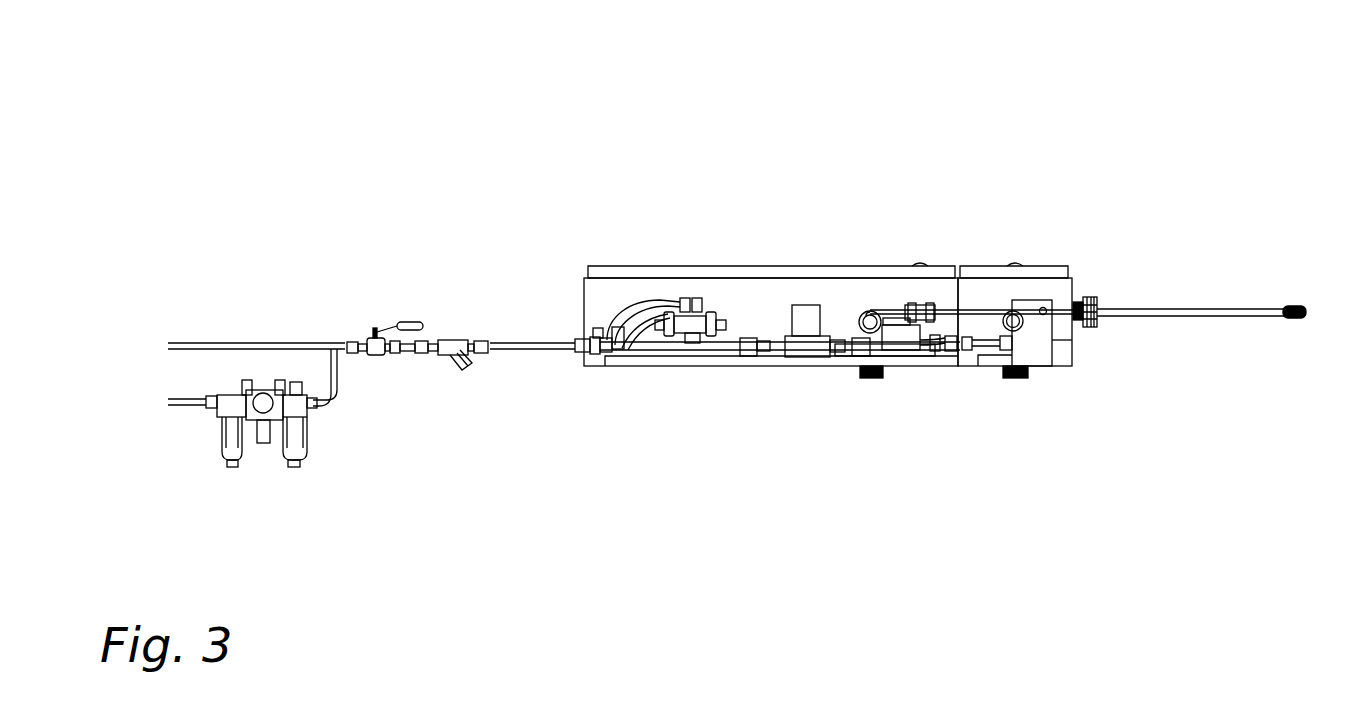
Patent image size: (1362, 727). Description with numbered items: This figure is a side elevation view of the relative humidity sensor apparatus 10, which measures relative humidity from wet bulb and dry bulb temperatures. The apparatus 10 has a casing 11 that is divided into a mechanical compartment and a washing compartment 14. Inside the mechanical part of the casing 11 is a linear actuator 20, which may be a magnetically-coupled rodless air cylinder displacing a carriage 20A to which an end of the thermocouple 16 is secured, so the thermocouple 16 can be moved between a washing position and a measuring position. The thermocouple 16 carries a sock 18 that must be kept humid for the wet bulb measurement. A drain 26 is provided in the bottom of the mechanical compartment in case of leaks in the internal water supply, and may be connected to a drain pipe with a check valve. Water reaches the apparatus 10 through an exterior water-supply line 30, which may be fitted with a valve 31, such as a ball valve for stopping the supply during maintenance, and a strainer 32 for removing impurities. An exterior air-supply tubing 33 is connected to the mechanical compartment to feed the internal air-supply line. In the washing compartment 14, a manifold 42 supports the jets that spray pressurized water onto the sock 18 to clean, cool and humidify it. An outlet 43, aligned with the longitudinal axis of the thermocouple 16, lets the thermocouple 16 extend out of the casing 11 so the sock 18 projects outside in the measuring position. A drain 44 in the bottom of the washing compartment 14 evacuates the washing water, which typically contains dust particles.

The relative humidity sensor apparatus 10 is at (593, 231).
The casing 11 is at (768, 368).
The washing compartment 14 is at (1032, 270).
The thermocouple 16 is at (1222, 308).
The sock 18 is at (1302, 302).
The linear actuator 20 is at (774, 322).
The carriage 20A is at (893, 313).
The drain 26 is at (833, 482).
The exterior water-supply line 30 is at (162, 392).
The valve 31 is at (378, 366).
The strainer 32 is at (463, 380).
The exterior air-supply tubing 33 is at (167, 335).
The manifold 42 is at (1062, 340).
The outlet 43 is at (1104, 331).
The drain 44 is at (978, 482).